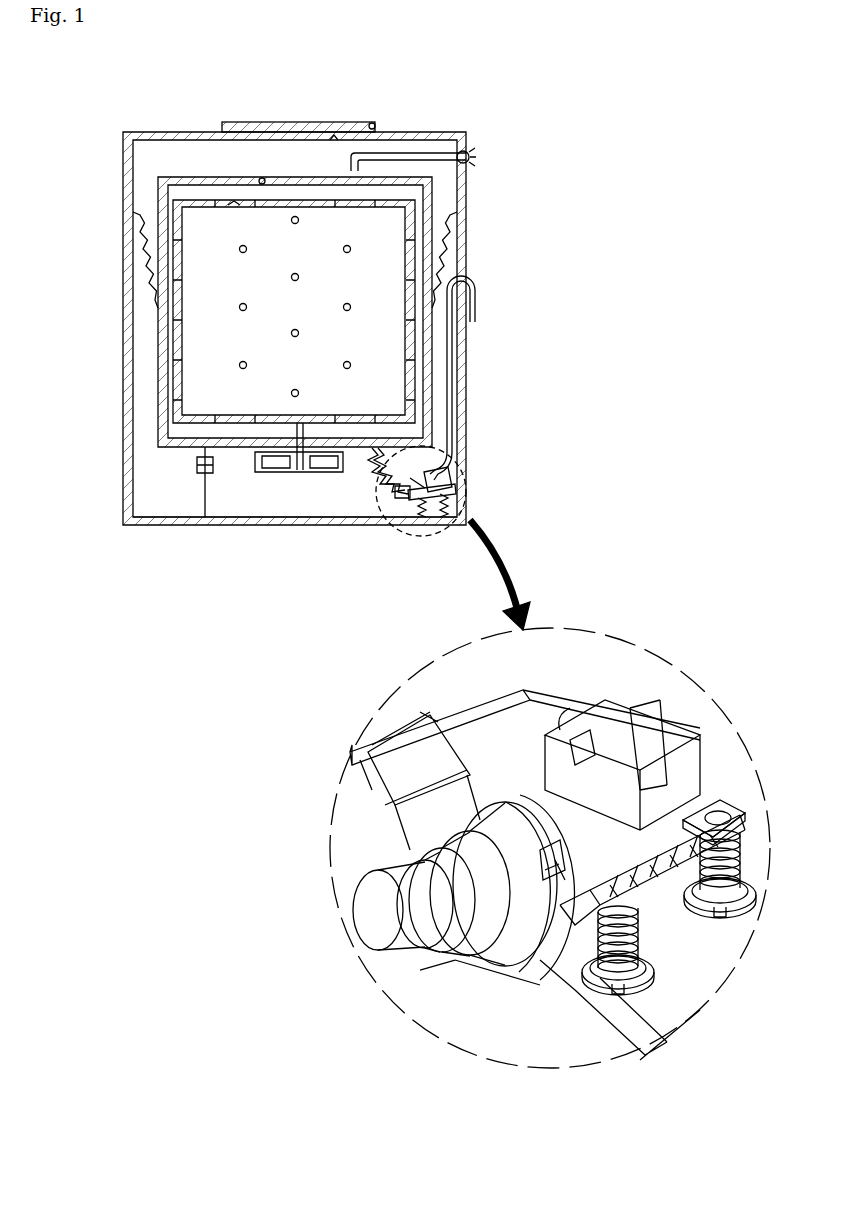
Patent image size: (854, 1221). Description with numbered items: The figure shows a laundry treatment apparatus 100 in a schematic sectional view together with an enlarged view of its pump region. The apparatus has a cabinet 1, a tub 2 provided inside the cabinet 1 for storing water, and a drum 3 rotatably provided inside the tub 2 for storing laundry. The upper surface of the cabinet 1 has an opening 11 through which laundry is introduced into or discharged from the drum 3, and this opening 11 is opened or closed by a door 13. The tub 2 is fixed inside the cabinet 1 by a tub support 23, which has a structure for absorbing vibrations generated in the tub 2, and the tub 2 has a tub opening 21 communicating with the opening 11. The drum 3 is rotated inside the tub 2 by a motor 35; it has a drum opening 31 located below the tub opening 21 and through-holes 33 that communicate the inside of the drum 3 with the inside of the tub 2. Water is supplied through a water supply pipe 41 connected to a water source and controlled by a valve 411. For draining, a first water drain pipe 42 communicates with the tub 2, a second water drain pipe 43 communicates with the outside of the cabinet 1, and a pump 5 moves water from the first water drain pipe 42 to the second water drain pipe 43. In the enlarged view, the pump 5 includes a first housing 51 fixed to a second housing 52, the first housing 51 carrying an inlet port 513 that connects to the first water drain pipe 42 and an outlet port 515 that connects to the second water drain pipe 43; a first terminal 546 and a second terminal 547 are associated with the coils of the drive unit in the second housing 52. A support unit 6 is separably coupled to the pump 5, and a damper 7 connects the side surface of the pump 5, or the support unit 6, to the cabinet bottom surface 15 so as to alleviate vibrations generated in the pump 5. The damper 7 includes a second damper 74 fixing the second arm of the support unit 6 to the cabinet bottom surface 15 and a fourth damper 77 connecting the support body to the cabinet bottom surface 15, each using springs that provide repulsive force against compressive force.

The laundry treatment apparatus 100 is at (92, 84).
The cabinet 1 is at (123, 182).
The opening 11 is at (335, 137).
The door 13 is at (290, 122).
The cabinet bottom surface 15 is at (165, 525).
The tub 2 is at (158, 432).
The tub opening 21 is at (262, 177).
The tub support 23 is at (142, 266).
The drum 3 is at (173, 378).
The drum opening 31 is at (235, 203).
The through-holes 33 is at (150, 150).
The motor 35 is at (300, 472).
The water supply pipe 41 is at (420, 153).
The valve 411 is at (470, 160).
The first water drain pipe 42 is at (372, 490).
The second water drain pipe 43 is at (452, 402).
The pump 5 is at (455, 478).
The first housing 51 is at (457, 960).
The second housing 52 is at (585, 712).
The inlet port 513 is at (375, 912).
The outlet port 515 is at (380, 765).
The first terminal 546 is at (700, 762).
The second terminal 547 is at (648, 742).
The support unit 6 is at (458, 496).
The damper 7 is at (425, 518).
The second damper 74 is at (650, 988).
The fourth damper 77 is at (685, 911).